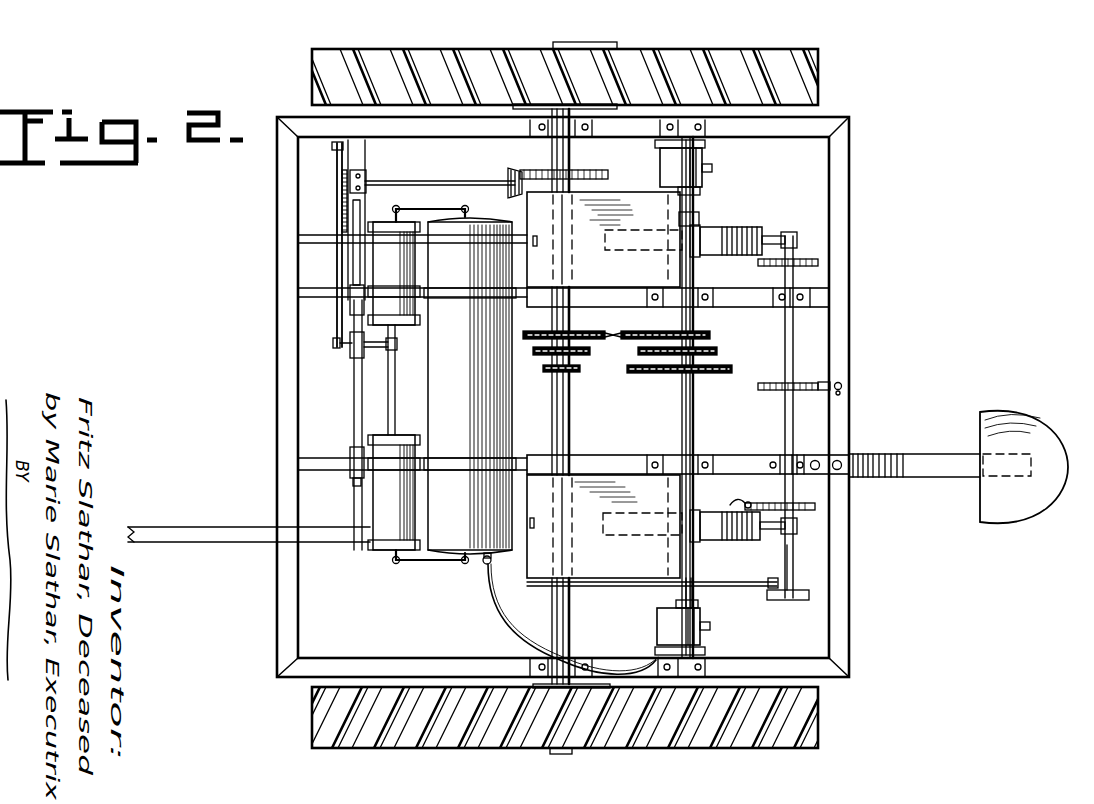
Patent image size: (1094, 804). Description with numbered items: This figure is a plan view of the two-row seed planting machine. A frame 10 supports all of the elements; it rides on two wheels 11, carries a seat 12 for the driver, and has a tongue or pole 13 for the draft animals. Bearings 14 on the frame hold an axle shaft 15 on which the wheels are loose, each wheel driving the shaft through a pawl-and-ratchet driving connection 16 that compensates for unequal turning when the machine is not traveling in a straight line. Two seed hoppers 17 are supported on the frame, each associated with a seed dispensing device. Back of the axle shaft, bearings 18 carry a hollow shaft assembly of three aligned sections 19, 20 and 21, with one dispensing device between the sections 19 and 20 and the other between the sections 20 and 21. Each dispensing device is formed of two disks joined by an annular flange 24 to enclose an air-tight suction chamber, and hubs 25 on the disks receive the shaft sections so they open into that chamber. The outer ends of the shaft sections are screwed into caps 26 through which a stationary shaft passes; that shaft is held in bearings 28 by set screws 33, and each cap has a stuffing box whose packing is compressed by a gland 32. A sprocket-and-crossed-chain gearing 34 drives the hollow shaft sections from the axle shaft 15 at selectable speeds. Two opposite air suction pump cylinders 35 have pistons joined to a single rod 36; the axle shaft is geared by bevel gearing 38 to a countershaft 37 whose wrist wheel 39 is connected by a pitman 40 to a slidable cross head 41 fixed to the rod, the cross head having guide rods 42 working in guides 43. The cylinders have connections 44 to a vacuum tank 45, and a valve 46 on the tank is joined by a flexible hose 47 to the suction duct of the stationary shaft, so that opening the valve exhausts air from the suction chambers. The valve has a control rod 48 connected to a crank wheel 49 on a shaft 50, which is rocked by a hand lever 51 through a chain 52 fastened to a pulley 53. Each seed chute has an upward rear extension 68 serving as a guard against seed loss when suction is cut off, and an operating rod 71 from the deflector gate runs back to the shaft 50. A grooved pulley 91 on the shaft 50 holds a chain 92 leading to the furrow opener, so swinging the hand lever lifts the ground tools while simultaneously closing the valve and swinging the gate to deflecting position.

The frame 10 is at (850, 168).
The wheels 11 is at (820, 60).
The seat 12 is at (958, 467).
The tongue or pole 13 is at (168, 527).
The bearings 14 is at (556, 130).
The axle shaft 15 is at (570, 408).
The pawl-and-ratchet driving connection 16 is at (560, 104).
The seed hoppers 17 is at (603, 385).
The bearings 18 is at (652, 298).
The hollow shaft section 19 is at (696, 216).
The hollow shaft section 20 is at (694, 408).
The hollow shaft section 21 is at (695, 572).
The annular flange 24 is at (682, 240).
The hubs 25 is at (698, 236).
The caps 26 is at (703, 163).
The bearings 28 is at (702, 130).
The gland 32 is at (676, 166).
The set screws 33 is at (660, 143).
The sprocket-and-crossed-chain gearing 34 is at (642, 331).
The air suction pump cylinders 35 is at (394, 386).
The rod 36 is at (395, 398).
The countershaft 37 is at (408, 181).
The bevel gearing 38 is at (510, 175).
The wrist wheel 39 is at (342, 176).
The pitman 40 is at (345, 258).
The cross head 41 is at (354, 356).
The guide rods 42 is at (355, 300).
The guides 43 is at (352, 341).
The connections 44 is at (470, 211).
The vacuum tank 45 is at (470, 386).
The valve 46 is at (484, 574).
The flexible hose 47 is at (510, 636).
The control rod 48 is at (737, 587).
The crank wheel 49 is at (792, 600).
The shaft 50 is at (790, 566).
The hand lever 51 is at (843, 385).
The chain 52 is at (820, 383).
The pulley 53 is at (772, 383).
The upward rear extension 68 is at (745, 228).
The operating rod 71 is at (778, 238).
The grooved pulley 91 is at (818, 262).
The chain 92 is at (750, 502).